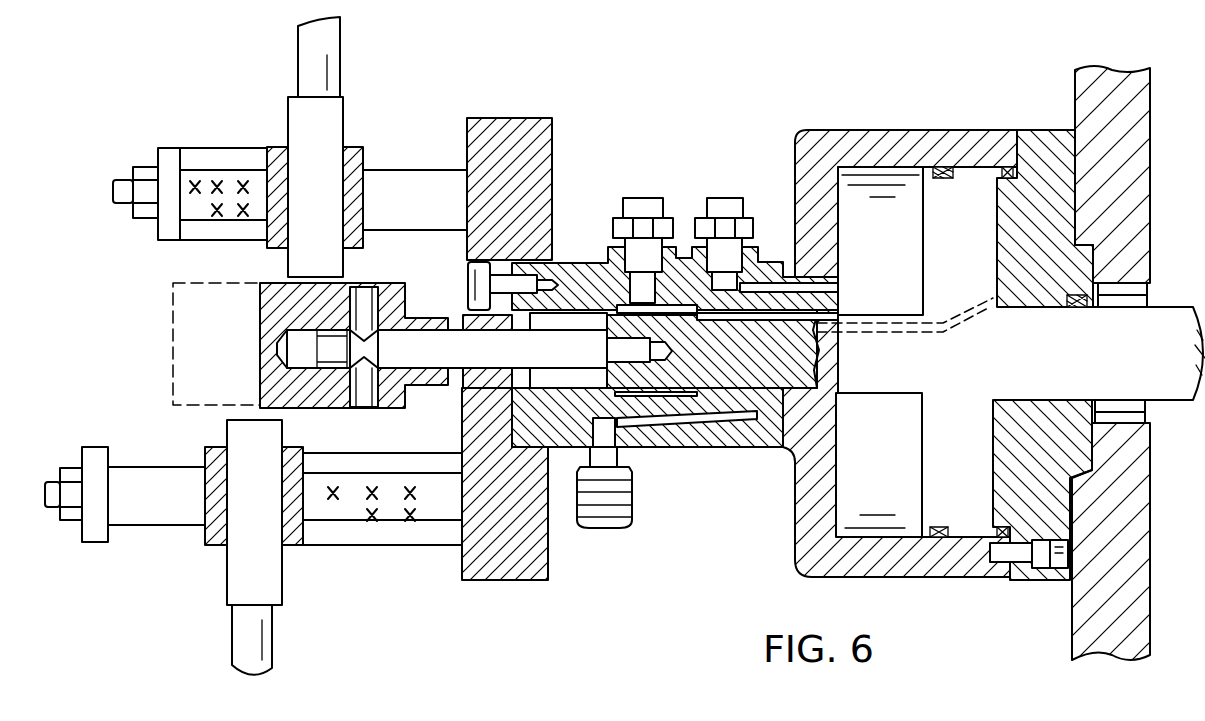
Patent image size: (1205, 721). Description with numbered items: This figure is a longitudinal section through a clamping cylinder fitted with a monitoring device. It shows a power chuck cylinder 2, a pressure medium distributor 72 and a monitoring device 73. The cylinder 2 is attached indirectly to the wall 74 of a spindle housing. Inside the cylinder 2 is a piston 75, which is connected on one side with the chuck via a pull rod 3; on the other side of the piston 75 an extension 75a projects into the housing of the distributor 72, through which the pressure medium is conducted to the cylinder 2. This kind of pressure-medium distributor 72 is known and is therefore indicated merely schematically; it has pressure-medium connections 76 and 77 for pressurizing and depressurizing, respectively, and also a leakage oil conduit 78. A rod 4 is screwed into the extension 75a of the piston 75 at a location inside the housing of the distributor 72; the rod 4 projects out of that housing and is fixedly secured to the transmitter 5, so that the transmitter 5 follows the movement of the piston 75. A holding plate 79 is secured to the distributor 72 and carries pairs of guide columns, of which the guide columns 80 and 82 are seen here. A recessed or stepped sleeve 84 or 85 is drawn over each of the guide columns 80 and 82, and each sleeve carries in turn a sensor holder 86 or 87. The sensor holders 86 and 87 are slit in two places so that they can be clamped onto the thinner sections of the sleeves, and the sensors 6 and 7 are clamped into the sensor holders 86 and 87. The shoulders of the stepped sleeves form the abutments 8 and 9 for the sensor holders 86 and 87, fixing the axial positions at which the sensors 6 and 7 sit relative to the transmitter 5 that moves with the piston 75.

The power chuck cylinder 2 is at (927, 127).
The pull rod 3 is at (1167, 325).
The rod 4 is at (458, 357).
The transmitter 5 is at (323, 403).
The sensor 6 is at (265, 582).
The sensor 7 is at (323, 132).
The abutment 8 is at (293, 533).
The abutment 9 is at (273, 157).
The pressure medium distributor 72 is at (653, 351).
The monitoring device 73 is at (293, 148).
The wall 74 is at (1123, 133).
The piston 75 is at (943, 222).
The extension 75a is at (868, 393).
The pressure-medium connection 76 is at (643, 203).
The pressure-medium connection 77 is at (727, 202).
The leakage oil conduit 78 is at (612, 530).
The holding plate 79 is at (542, 143).
The guide column 80 is at (45, 480).
The guide column 82 is at (113, 197).
The stepped sleeve 84 is at (388, 533).
The stepped sleeve 85 is at (194, 153).
The sensor holder 86 is at (213, 545).
The sensor holder 87 is at (277, 245).